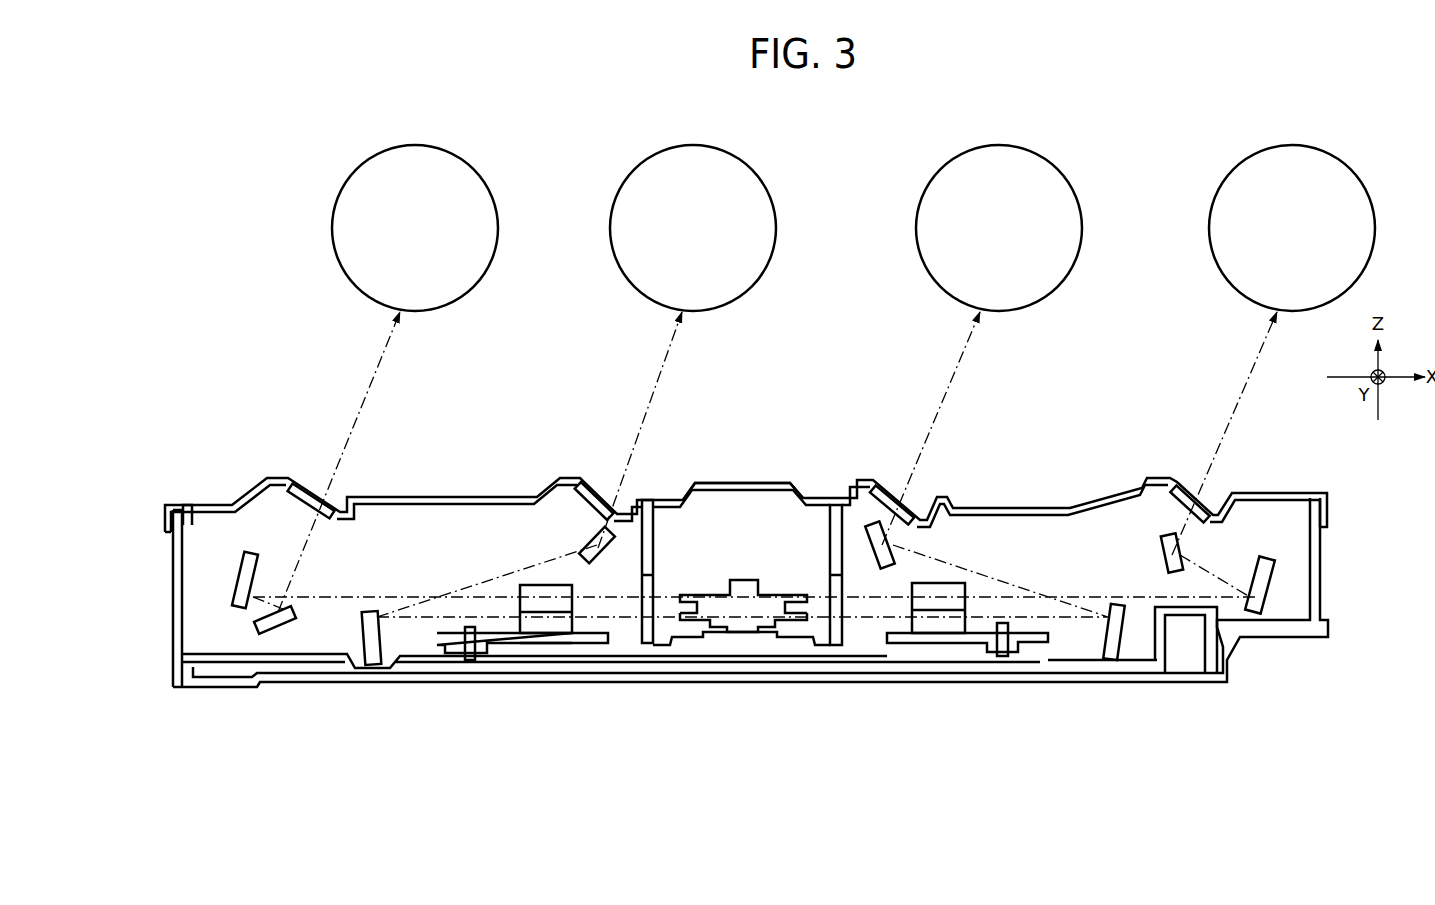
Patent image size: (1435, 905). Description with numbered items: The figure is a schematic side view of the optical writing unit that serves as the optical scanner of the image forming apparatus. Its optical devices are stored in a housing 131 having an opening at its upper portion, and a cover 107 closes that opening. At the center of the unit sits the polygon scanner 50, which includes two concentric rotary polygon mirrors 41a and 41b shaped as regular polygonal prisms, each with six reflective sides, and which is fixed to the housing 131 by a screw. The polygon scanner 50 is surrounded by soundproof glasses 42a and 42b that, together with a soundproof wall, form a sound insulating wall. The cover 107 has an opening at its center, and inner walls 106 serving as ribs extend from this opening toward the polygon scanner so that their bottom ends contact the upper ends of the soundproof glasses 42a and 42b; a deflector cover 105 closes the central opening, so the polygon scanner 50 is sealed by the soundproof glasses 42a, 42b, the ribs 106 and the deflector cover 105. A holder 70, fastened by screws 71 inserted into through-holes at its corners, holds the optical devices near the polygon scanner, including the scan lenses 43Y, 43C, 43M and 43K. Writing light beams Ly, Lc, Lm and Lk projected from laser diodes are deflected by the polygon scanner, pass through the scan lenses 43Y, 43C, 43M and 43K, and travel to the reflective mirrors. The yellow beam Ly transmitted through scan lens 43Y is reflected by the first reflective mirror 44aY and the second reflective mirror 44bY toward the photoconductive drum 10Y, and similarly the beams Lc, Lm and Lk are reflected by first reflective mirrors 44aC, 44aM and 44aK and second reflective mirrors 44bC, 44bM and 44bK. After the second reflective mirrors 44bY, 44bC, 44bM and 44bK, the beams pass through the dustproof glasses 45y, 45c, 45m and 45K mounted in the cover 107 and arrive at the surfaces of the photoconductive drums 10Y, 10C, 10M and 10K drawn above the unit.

The photoconductive drum 10Y is at (397, 239).
The photoconductive drum 10C is at (675, 239).
The photoconductive drum 10M is at (980, 239).
The photoconductive drum 10K is at (1274, 239).
The writing light beam Ly is at (380, 366).
The writing light beam Lc is at (660, 366).
The writing light beam Lm is at (958, 366).
The writing light beam Lk is at (1255, 366).
The dustproof glass 45y is at (318, 488).
The dustproof glass 45c is at (598, 478).
The dustproof glass 45m is at (898, 478).
The dustproof glass 45K is at (1195, 480).
The deflector cover 105 is at (752, 484).
The inner wall 106 is at (739, 595).
The cover 107 is at (1330, 497).
The housing 131 is at (1322, 575).
The first reflective mirror 44aY is at (248, 556).
The second reflective mirror 44bY is at (258, 628).
The first reflective mirror 44aC is at (362, 636).
The second reflective mirror 44bC is at (605, 558).
The second reflective mirror 44bM is at (876, 523).
The first reflective mirror 44aM is at (1122, 645).
The second reflective mirror 44bK is at (1162, 552).
The first reflective mirror 44aK is at (1266, 558).
The scan lens 43Y is at (525, 588).
The scan lens 43C is at (548, 634).
The scan lens 43M is at (930, 634).
The scan lens 43K is at (950, 585).
The holder 70 is at (522, 639).
The screw 71 is at (470, 660).
The rotary polygon mirror 41a is at (706, 592).
The rotary polygon mirror 41b is at (697, 633).
The polygon scanner 50 is at (741, 622).
The soundproof glass 42a is at (647, 648).
The soundproof glass 42b is at (838, 648).